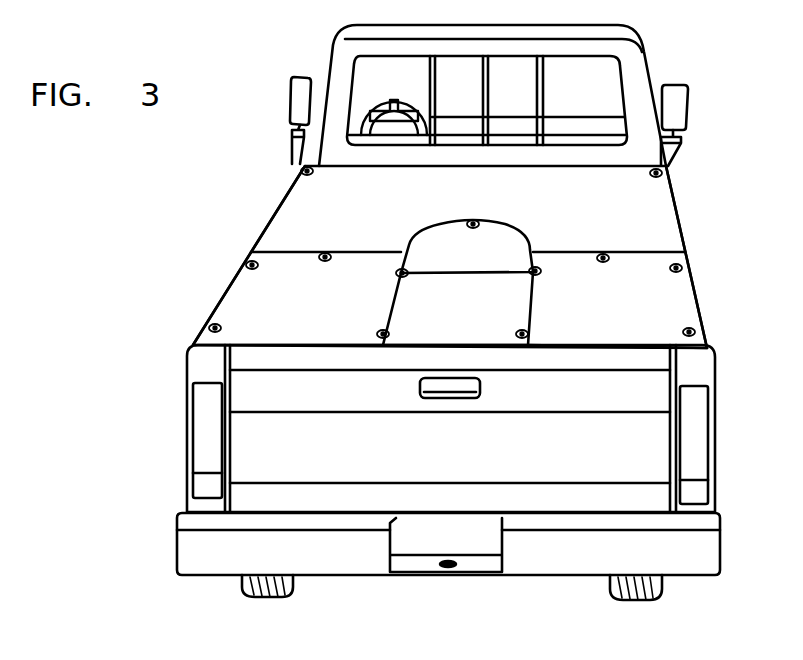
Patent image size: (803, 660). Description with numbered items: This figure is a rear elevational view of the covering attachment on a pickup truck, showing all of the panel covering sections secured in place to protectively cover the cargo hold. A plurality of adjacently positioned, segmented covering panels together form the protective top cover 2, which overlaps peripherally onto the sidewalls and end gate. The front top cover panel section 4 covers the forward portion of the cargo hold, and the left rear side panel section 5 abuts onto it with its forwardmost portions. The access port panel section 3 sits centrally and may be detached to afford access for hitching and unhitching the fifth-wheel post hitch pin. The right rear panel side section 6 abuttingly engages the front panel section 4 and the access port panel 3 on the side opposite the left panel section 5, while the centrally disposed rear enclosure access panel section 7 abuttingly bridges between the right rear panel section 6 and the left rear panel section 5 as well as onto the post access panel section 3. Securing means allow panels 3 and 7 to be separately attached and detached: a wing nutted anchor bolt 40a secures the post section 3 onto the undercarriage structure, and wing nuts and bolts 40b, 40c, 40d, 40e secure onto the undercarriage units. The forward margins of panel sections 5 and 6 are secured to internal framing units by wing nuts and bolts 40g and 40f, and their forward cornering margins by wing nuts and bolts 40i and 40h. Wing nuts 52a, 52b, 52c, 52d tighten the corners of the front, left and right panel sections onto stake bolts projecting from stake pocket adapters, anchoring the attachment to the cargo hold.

The protective top cover 2 is at (212, 290).
The access port panel section 3 is at (460, 260).
The front top cover panel section 4 is at (383, 209).
The left rear side panel section 5 is at (305, 317).
The right rear panel side section 6 is at (617, 315).
The rear enclosure access panel section 7 is at (470, 322).
The wing nutted anchor bolt 40a is at (480, 222).
The wing nut and bolt 40b is at (409, 240).
The wing nut and bolt 40c is at (380, 335).
The wing nut and bolt 40d is at (538, 266).
The wing nut and bolt 40e is at (525, 335).
The wing nut and bolt 40f is at (322, 253).
The wing nut and bolt 40g is at (608, 256).
The wing nut and bolt 40h is at (681, 265).
The wing nut and bolt 40i is at (247, 261).
The wing nut 52a is at (300, 171).
The wing nut 52b is at (209, 327).
The wing nut 52c is at (671, 188).
The wing nut 52d is at (696, 330).